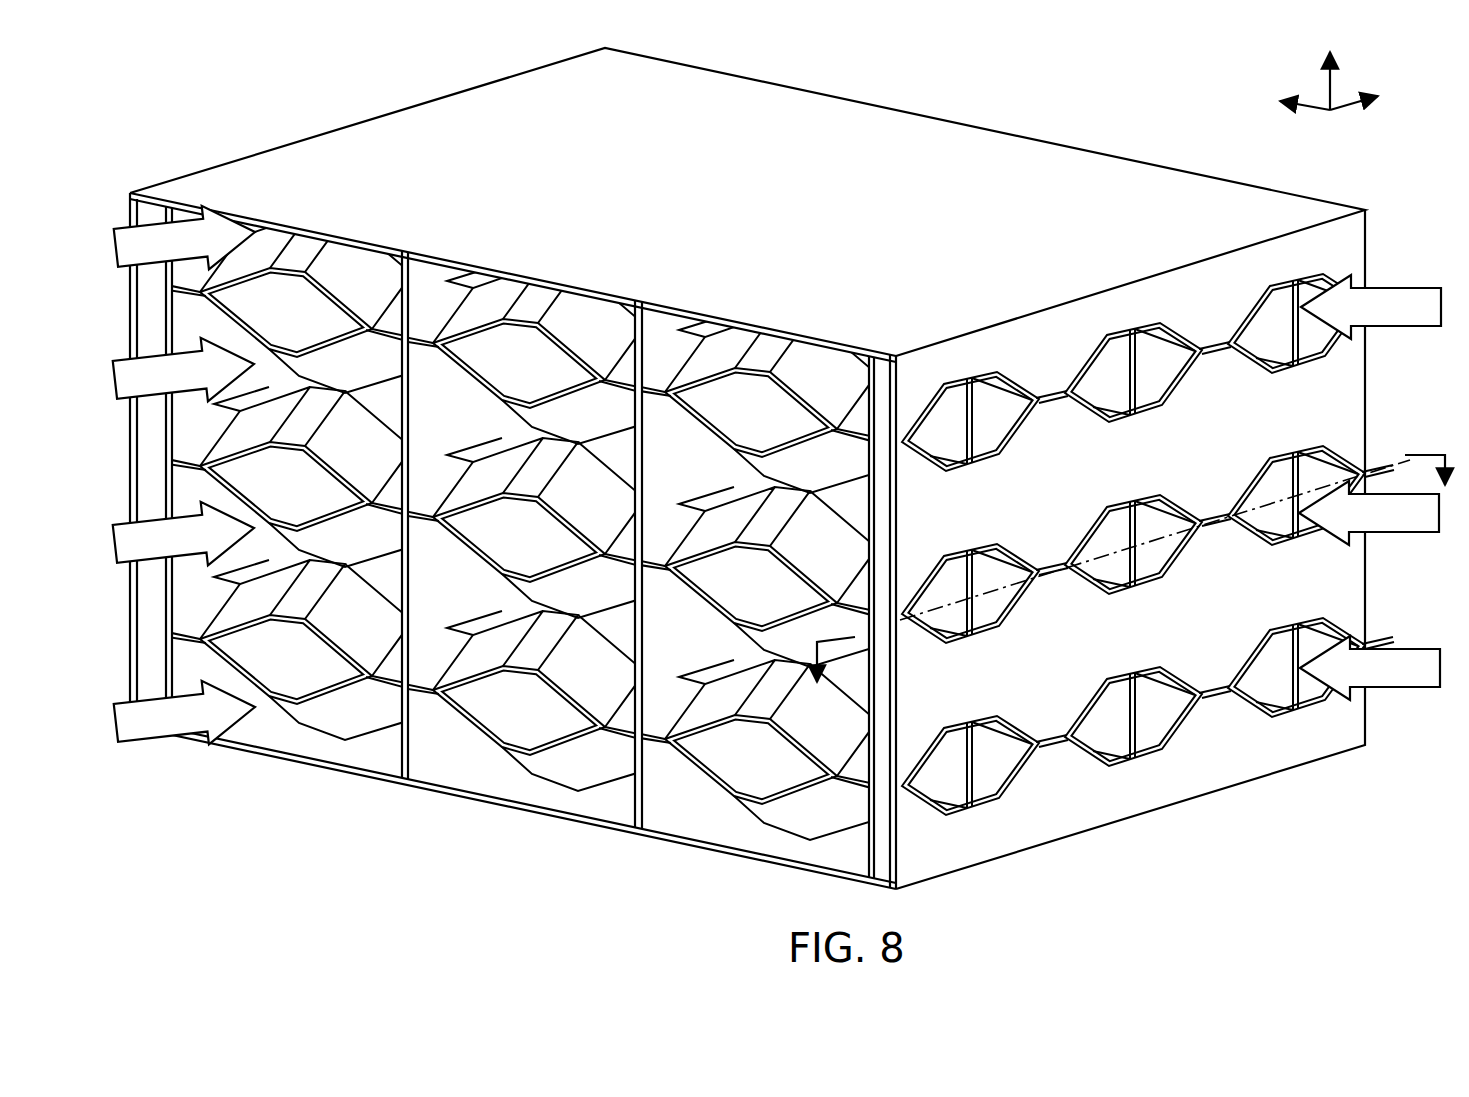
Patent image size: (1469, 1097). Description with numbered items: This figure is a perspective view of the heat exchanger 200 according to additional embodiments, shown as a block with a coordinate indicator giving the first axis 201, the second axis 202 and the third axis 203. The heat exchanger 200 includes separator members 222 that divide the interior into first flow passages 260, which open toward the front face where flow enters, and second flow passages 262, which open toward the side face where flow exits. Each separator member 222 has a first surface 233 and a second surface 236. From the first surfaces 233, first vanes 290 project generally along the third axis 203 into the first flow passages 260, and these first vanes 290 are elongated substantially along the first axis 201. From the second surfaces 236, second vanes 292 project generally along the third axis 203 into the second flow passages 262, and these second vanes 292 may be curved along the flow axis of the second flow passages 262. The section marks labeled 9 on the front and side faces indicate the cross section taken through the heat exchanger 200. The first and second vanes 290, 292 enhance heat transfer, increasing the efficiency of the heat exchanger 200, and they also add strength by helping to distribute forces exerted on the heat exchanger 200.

The heat exchanger 200 is at (783, 468).
The first axis 201 is at (1352, 102).
The second axis 202 is at (1302, 106).
The third axis 203 is at (1330, 80).
The separator members 222 is at (570, 680).
The first surfaces 233 is at (725, 345).
The second surfaces 236 is at (1005, 390).
The first flow passages 260 is at (440, 583).
The second flow passages 262 is at (1150, 740).
The first vanes 290 is at (519, 522).
The second vanes 292 is at (1174, 551).
The section line 9 is at (1129, 595).